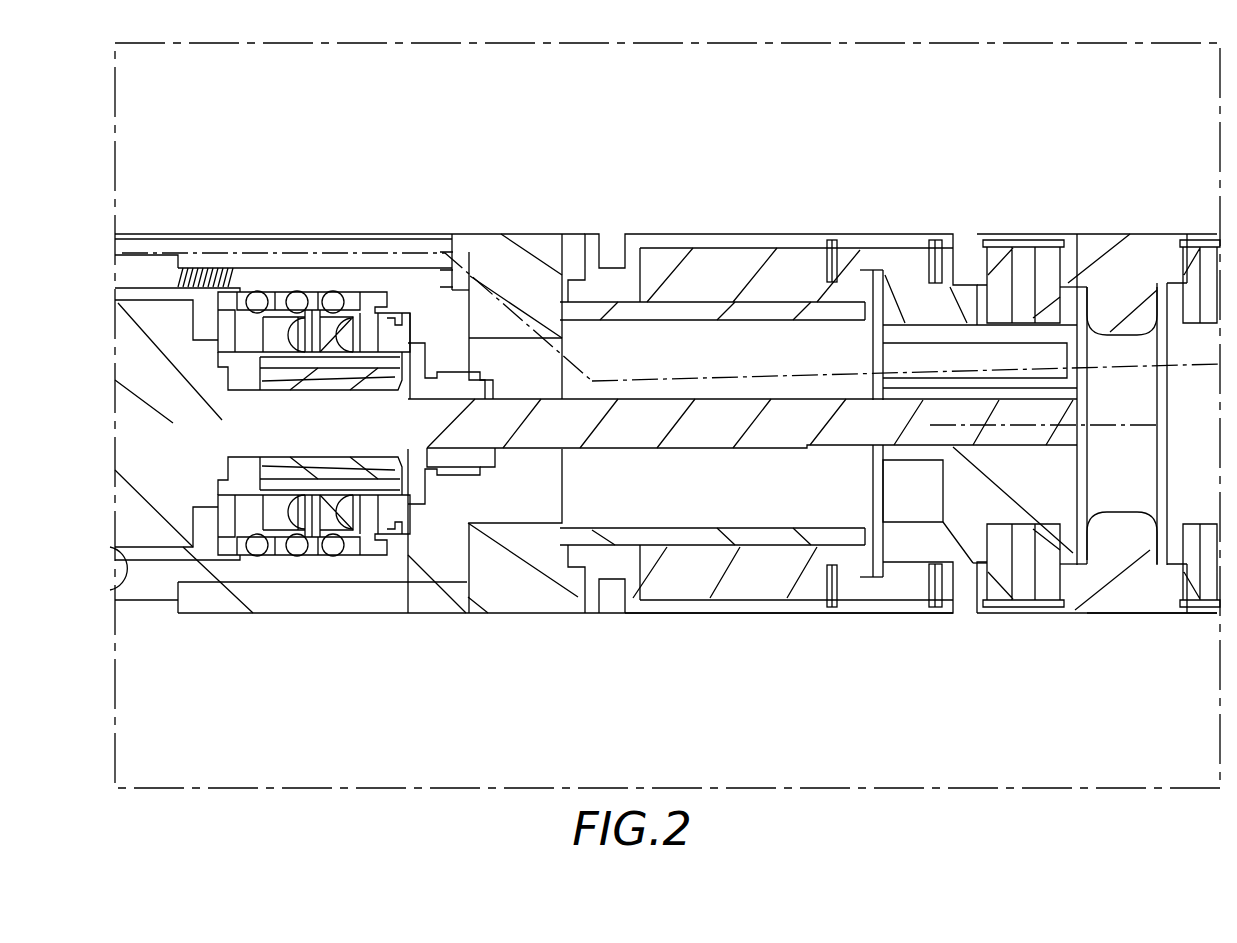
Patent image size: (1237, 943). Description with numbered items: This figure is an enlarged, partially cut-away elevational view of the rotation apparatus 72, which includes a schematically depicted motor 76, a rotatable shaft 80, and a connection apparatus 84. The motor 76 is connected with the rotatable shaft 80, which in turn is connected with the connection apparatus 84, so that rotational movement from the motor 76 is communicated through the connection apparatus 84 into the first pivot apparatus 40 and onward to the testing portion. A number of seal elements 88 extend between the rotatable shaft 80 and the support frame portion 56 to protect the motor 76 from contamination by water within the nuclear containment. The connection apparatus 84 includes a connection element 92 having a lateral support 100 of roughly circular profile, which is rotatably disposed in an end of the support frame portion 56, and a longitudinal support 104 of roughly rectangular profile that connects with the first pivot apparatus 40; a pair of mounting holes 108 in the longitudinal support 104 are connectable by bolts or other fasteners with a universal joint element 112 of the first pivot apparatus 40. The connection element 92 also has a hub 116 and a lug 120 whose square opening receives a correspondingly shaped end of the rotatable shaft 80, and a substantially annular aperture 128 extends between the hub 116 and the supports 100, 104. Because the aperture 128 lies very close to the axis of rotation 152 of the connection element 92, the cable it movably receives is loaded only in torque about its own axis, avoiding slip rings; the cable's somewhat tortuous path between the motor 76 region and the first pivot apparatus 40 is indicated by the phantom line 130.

The first pivot apparatus 40 is at (1143, 222).
The support frame portion 56 is at (176, 234).
The rotation apparatus 72 is at (512, 395).
The motor 76 is at (143, 568).
The rotatable shaft 80 is at (718, 450).
The connection apparatus 84 is at (966, 588).
The seal elements 88 is at (243, 307).
The connection element 92 is at (961, 268).
The lateral support 100 is at (863, 240).
The longitudinal support 104 is at (1073, 250).
The mounting holes 108 is at (992, 298).
The universal joint element 112 is at (1127, 616).
The hub 116 is at (927, 463).
The lug 120 is at (933, 513).
The aperture 128 is at (890, 367).
The phantom line 130 is at (633, 382).
The axis of rotation 152 is at (1103, 427).